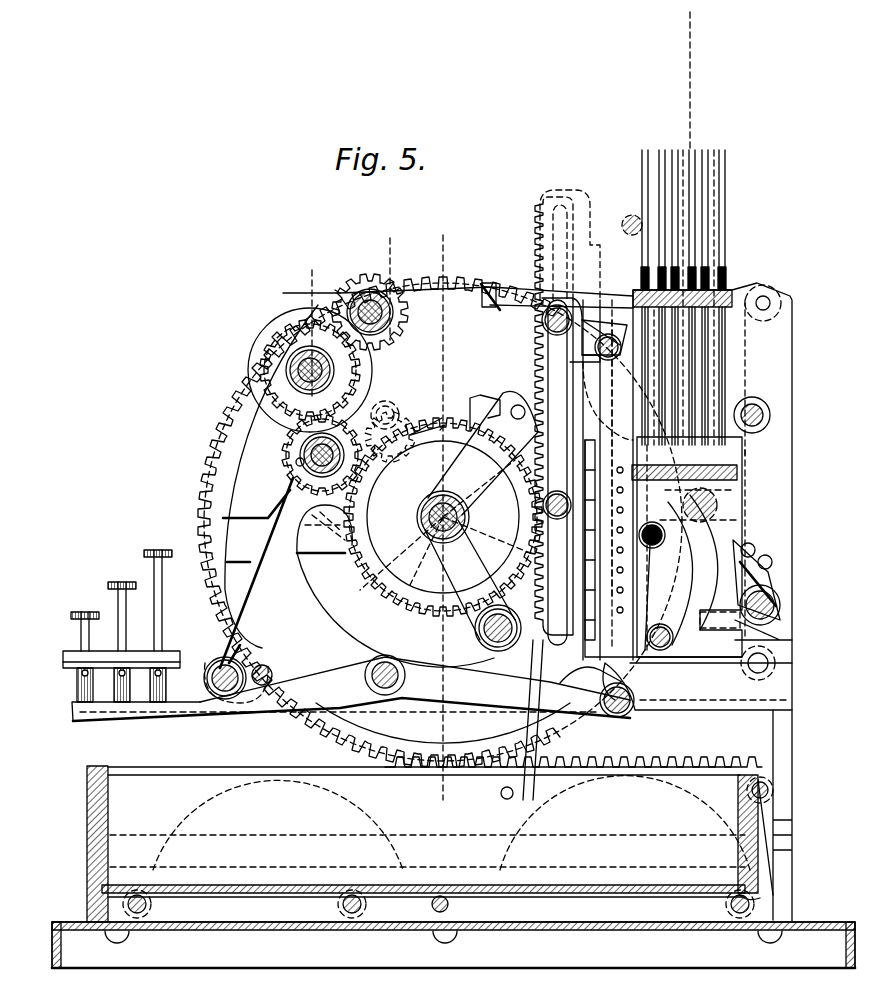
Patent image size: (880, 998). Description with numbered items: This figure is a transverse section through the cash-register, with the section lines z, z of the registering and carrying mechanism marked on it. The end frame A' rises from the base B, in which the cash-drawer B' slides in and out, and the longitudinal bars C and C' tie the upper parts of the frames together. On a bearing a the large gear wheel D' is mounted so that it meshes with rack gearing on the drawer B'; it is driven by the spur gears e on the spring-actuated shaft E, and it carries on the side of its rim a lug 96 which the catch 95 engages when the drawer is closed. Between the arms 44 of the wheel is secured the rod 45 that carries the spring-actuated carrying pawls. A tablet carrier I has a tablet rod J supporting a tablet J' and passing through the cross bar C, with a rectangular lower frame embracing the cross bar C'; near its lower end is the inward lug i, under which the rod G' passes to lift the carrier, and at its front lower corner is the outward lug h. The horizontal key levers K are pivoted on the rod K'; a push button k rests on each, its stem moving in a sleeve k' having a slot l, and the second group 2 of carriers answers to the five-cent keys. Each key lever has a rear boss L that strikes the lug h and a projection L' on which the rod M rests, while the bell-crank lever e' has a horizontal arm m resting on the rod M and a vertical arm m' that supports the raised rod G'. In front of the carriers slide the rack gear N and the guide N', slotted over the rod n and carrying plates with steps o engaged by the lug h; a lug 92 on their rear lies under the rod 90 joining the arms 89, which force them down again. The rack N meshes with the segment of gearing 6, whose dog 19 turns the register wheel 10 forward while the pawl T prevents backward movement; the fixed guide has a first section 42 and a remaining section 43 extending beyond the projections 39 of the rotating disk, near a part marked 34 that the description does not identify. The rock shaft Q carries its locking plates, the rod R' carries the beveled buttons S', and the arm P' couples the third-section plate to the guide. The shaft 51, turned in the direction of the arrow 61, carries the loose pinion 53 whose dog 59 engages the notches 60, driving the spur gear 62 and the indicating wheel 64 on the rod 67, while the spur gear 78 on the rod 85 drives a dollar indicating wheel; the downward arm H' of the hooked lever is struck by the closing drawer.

The base B is at (453, 723).
The cash-drawer B' is at (414, 811).
The end frame A' is at (527, 602).
The large gear wheel D' is at (426, 522).
The register wheel 10 is at (443, 517).
The segment of gearing 6 is at (443, 517).
The bearings a is at (468, 510).
The first section of fixed segmental guide 42 is at (405, 610).
The arrow 61 is at (355, 495).
The projections 39 is at (362, 570).
The remaining section of fixed segmental guide 43 is at (500, 600).
The pawls T is at (538, 515).
The spring actuated dog 19 is at (470, 390).
The rod 45 is at (478, 638).
The pin 34 is at (448, 631).
The first cents register indicating wheel 64 is at (297, 370).
The spur gear 62 is at (268, 378).
The rod 67 is at (352, 375).
The rod 85 is at (390, 340).
The spur gear 78 is at (294, 295).
The loose pinion 53 is at (300, 455).
The spring actuated dog 59 is at (294, 448).
The notches 60 is at (300, 462).
The shaft 51 is at (296, 478).
The arms 44 is at (486, 297).
The lug 96 is at (490, 283).
The catch 95 is at (505, 296).
The rack-gear N is at (560, 428).
The guide N' is at (570, 414).
The lug or projection h is at (594, 548).
The steps o is at (613, 540).
The rod n is at (551, 430).
The rod 90 is at (585, 330).
The lug 92 is at (610, 360).
The arm 89 is at (748, 328).
The tablet rod J is at (670, 297).
The tablet J' is at (683, 205).
The longitudinal bar C is at (695, 279).
The tablet carrier I is at (730, 499).
The longitudinal bar C' is at (741, 463).
The rod G' is at (681, 624).
The vertical arm m' is at (705, 547).
The rock shaft Q is at (605, 460).
The rod R' is at (781, 415).
The beveled buttons S' is at (770, 388).
The arm P' is at (781, 586).
The bell-crank lever e' is at (759, 673).
The horizontal arm m is at (686, 674).
The lug or projection i is at (720, 628).
The key levers K is at (351, 704).
The rod K' is at (443, 675).
The rod M is at (624, 708).
The lug or boss L is at (591, 693).
The downward projecting arm H' is at (529, 722).
The horizontal projection L' is at (573, 750).
The push buttons k is at (121, 598).
The slot l is at (75, 688).
The sleeves k' is at (113, 649).
The second group of tablet carriers 2 is at (115, 687).
The spur gears e is at (233, 661).
The shaft E is at (224, 694).
The section line z is at (470, 234).